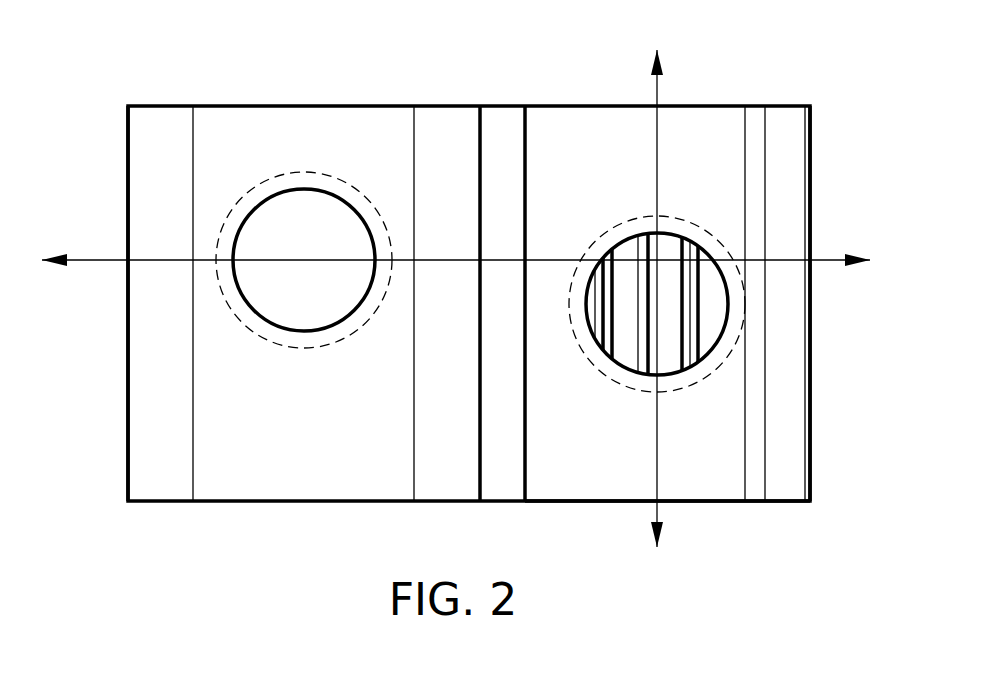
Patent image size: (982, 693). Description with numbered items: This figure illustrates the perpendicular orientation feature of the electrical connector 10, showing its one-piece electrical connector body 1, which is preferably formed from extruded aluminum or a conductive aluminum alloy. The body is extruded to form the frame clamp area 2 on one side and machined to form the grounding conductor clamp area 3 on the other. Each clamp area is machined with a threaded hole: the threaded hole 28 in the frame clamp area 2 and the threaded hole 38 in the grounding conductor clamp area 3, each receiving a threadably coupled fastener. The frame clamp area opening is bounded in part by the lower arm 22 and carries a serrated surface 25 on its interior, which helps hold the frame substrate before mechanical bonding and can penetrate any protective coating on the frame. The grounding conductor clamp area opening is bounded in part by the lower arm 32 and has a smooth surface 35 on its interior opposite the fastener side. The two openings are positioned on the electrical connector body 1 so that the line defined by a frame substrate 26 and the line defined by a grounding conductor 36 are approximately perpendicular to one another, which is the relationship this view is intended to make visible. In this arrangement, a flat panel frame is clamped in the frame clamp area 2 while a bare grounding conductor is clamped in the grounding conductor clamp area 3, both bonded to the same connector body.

The electrical connector body 1 is at (470, 94).
The frame clamp area 2 is at (798, 90).
The grounding conductor clamp area 3 is at (274, 522).
The electrical connector 10 is at (740, 522).
The lower arm 22 is at (806, 468).
The serrated surface 25 is at (603, 342).
The line defined by a frame substrate 26 is at (682, 73).
The threaded hole 28 is at (692, 314).
The lower arm 32 is at (138, 470).
The smooth surface 35 is at (284, 196).
The line defined by a grounding conductor 36 is at (846, 240).
The threaded hole 38 is at (279, 303).